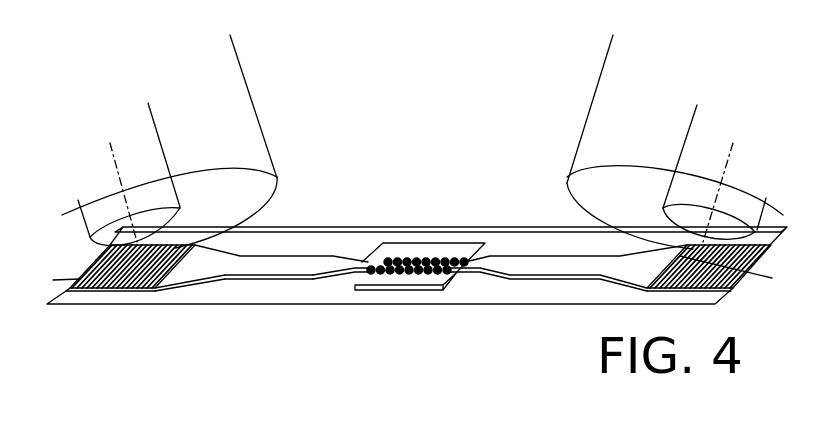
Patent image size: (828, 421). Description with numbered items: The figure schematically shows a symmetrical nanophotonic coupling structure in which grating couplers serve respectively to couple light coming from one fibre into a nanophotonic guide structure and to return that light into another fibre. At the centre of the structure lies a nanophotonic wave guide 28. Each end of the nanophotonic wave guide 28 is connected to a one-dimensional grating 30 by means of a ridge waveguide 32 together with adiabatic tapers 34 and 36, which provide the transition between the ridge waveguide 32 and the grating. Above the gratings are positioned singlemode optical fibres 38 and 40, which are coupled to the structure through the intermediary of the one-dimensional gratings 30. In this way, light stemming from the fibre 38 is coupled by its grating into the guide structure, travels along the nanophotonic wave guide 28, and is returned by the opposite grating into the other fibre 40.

The nanophotonic wave guide 28 is at (412, 286).
The 1-D grating 30 is at (131, 288).
The ridge waveguide 32 is at (283, 279).
The adiabatic taper 34 is at (206, 283).
The adiabatic taper 36 is at (340, 273).
The singlemode optical fibre 38 is at (257, 108).
The singlemode optical fibre 40 is at (596, 88).